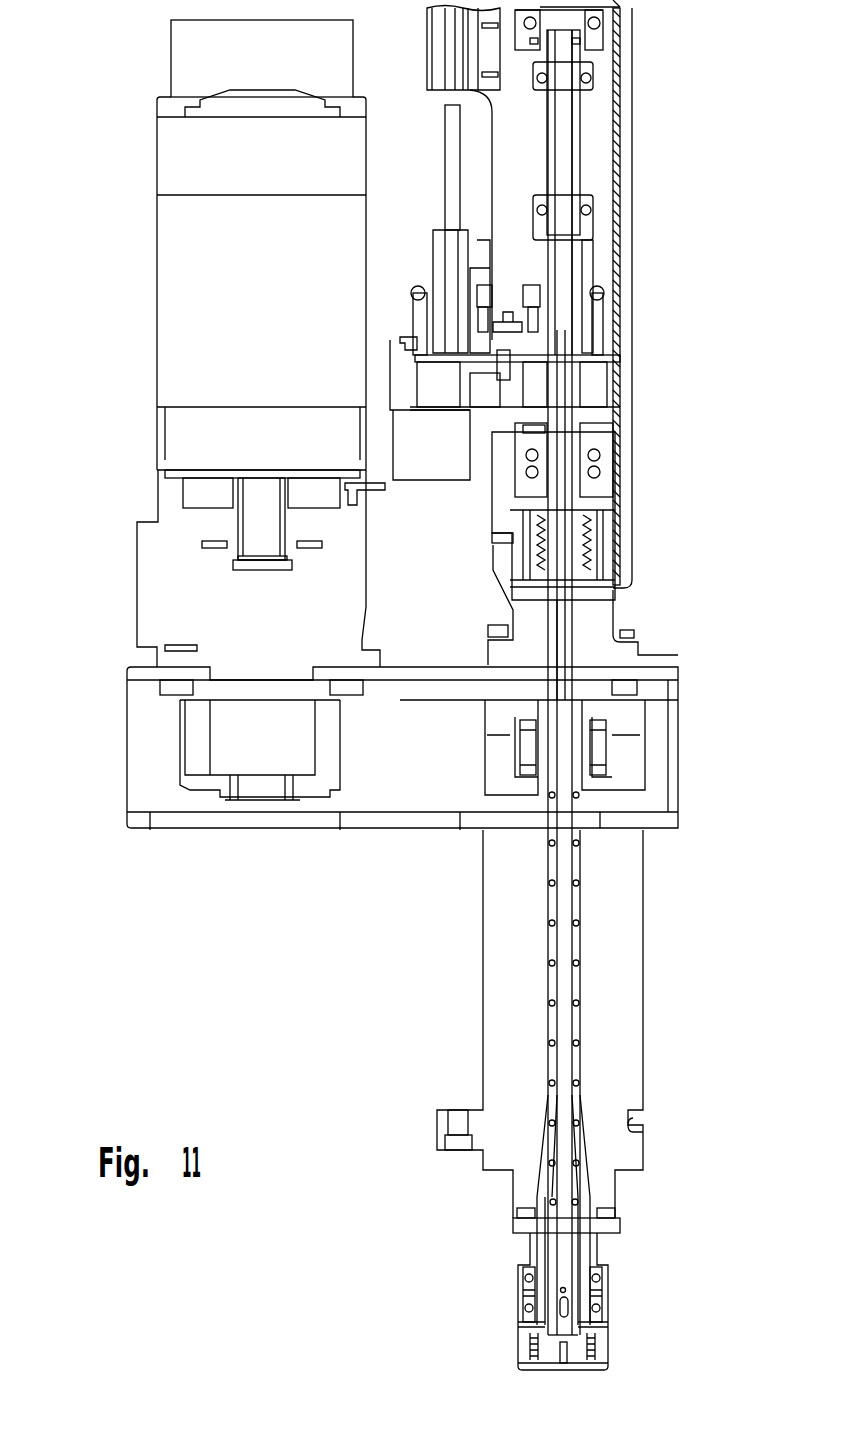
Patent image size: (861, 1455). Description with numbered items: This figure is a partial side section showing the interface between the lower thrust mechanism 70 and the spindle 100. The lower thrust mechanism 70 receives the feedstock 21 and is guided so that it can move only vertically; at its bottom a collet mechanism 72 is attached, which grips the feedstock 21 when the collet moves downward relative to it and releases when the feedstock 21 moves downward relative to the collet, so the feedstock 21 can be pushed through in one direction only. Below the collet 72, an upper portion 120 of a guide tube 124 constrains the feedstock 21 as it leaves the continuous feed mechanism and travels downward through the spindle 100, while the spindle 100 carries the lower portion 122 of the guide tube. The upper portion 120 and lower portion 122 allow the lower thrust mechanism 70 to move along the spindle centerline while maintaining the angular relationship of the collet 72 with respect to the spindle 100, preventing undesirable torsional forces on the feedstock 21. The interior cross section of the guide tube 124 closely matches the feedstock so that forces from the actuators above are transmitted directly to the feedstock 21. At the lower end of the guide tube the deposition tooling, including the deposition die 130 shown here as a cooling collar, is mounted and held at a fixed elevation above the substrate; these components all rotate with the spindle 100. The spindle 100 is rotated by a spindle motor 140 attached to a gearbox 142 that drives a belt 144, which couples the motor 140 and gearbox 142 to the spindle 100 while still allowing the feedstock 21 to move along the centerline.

The spindle motor 140 is at (175, 300).
The gearbox 142 is at (152, 579).
The belt 144 is at (412, 740).
The upper portion of the guide tube 120 is at (545, 625).
The lower portion of the guide tube 122 is at (577, 750).
The guide tube 124 is at (595, 910).
The feedstock 21 is at (565, 697).
The lower thrust mechanism 70 is at (608, 460).
The collet mechanism 72 is at (625, 548).
The spindle 100 is at (622, 995).
The deposition die 130 is at (630, 1292).